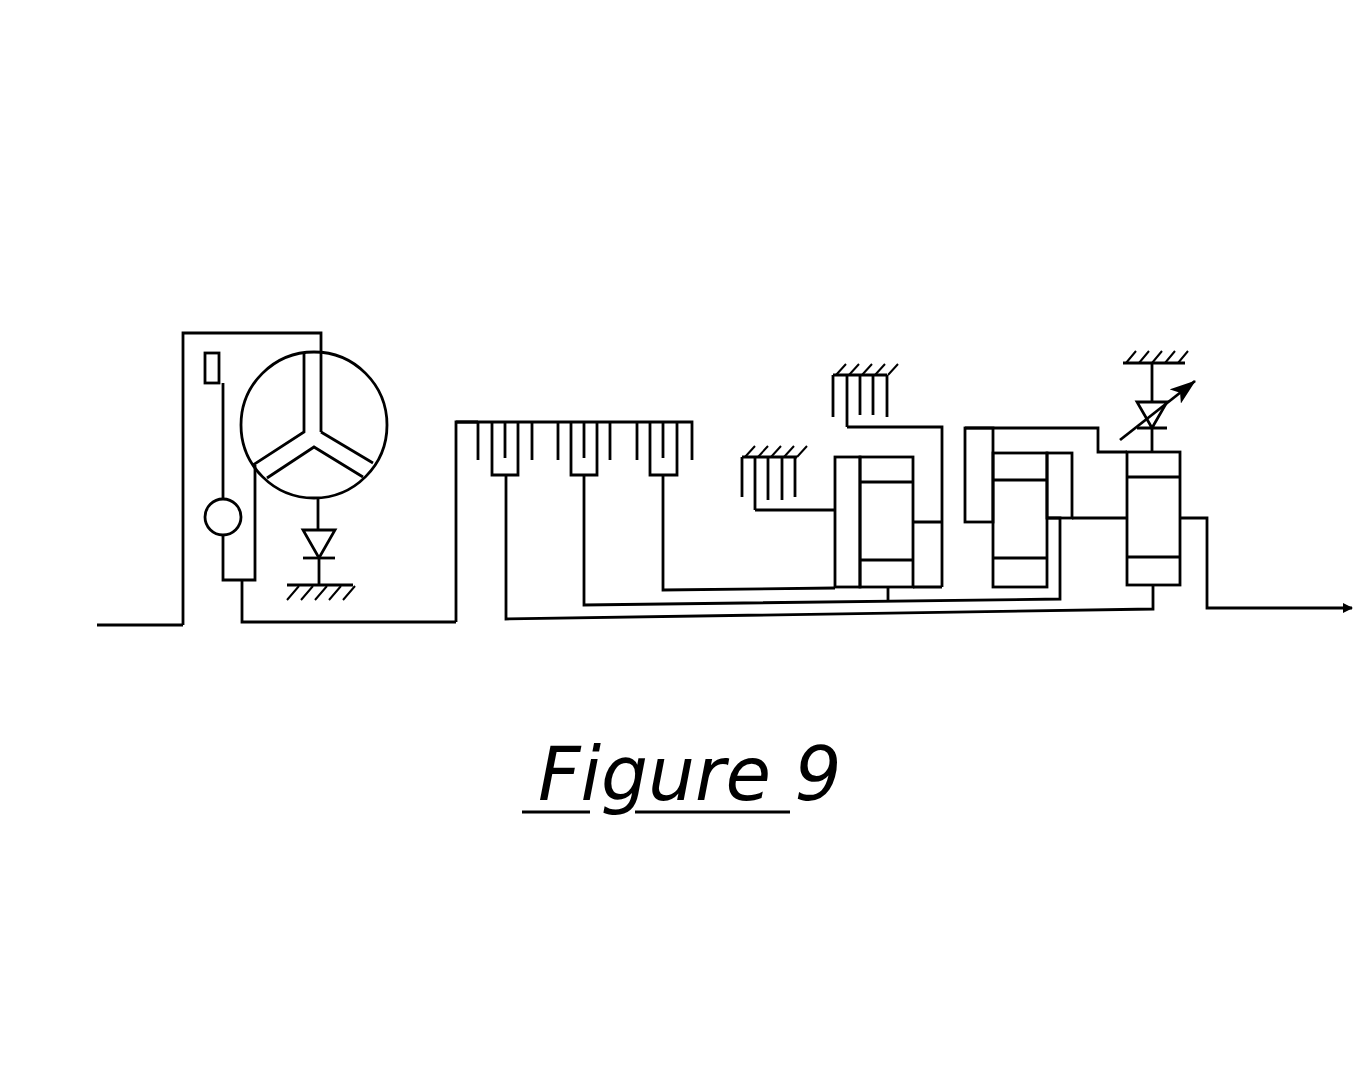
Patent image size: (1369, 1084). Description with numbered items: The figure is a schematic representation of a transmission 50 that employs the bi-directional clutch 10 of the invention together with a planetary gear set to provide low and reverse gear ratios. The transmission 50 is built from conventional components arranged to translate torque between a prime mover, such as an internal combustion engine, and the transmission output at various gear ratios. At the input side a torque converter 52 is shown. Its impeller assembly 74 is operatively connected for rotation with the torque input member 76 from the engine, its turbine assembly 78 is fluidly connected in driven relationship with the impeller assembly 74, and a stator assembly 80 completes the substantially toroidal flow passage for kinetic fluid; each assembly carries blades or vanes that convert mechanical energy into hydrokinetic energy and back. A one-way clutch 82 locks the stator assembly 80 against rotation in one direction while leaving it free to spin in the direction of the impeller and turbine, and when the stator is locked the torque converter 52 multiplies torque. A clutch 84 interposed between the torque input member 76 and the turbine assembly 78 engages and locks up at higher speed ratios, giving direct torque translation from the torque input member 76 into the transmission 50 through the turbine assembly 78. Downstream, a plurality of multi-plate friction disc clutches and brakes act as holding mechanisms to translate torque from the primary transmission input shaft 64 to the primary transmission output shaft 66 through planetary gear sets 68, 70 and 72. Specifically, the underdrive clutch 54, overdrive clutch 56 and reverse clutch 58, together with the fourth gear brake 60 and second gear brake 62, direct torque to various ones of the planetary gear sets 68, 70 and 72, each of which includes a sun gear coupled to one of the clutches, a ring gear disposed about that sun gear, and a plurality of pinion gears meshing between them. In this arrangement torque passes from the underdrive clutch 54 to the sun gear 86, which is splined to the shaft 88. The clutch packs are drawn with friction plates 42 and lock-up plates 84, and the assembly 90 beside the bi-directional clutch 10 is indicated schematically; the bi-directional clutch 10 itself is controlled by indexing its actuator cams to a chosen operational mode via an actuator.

The bi-directional clutch 10 is at (1199, 416).
The clutch plates 42 is at (1020, 571).
The transmission 50 is at (672, 309).
The torque converter 52 is at (330, 284).
The underdrive clutch 54 is at (495, 422).
The overdrive clutch 56 is at (570, 422).
The reverse clutch 58 is at (648, 422).
The fourth gear brake 60 is at (773, 440).
The second gear brake 62 is at (868, 357).
The primary transmission input shaft 64 is at (456, 542).
The primary transmission output shaft 66 is at (1207, 563).
The planetary gear set 68 is at (880, 533).
The planetary gear set 70 is at (1003, 530).
The planetary gear set 72 is at (1145, 525).
The impeller assembly 74 is at (342, 397).
The torque input member 76 is at (183, 543).
The turbine assembly 78 is at (275, 413).
The stator assembly 80 is at (303, 480).
The one-way clutch 82 is at (327, 537).
The clutch 84 is at (205, 363).
The sun gear 86 is at (520, 475).
The shaft 88 is at (583, 622).
The one-way clutch 90 is at (1153, 348).